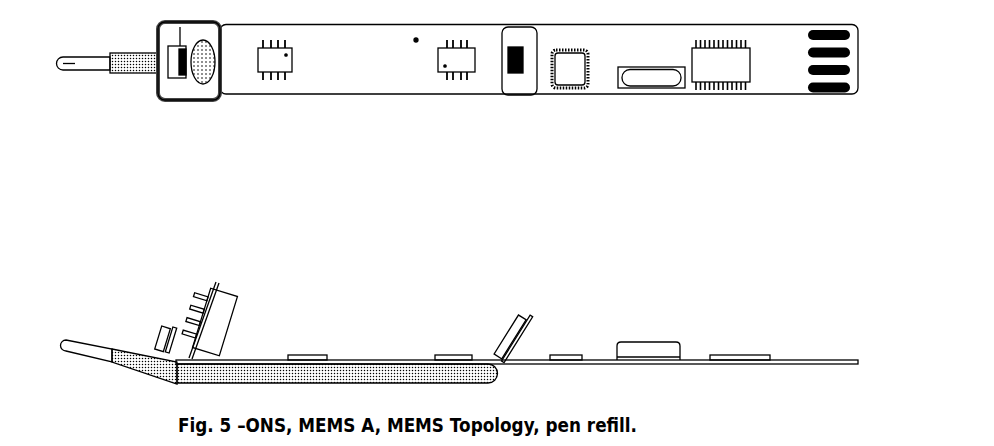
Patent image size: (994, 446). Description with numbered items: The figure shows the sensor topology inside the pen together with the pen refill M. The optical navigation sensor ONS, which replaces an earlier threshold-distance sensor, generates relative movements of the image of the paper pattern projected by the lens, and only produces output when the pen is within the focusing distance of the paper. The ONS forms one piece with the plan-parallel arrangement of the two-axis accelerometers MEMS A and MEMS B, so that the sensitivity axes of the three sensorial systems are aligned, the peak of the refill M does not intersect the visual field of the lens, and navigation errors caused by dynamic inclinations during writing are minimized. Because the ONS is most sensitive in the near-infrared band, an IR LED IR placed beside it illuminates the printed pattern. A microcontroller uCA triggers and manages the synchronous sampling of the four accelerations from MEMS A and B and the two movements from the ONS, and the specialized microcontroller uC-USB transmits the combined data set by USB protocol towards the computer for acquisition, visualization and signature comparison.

The pen refill M is at (120, 73).
The IR LED IR is at (169, 66).
The MEMS A accelerometer A is at (180, 76).
The optical navigation sensor ONS is at (221, 64).
The MEMS B accelerometer B is at (508, 77).
The microcontroller µCA uCA is at (567, 91).
The microcontroller µC-USB uC-USB is at (718, 85).